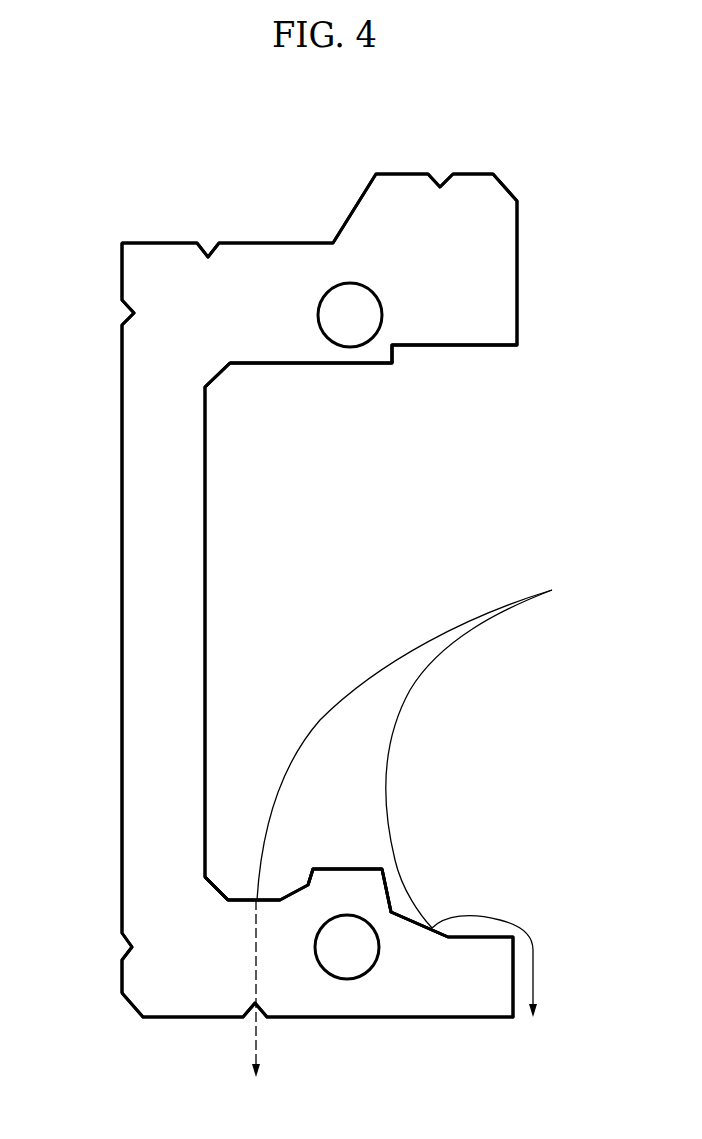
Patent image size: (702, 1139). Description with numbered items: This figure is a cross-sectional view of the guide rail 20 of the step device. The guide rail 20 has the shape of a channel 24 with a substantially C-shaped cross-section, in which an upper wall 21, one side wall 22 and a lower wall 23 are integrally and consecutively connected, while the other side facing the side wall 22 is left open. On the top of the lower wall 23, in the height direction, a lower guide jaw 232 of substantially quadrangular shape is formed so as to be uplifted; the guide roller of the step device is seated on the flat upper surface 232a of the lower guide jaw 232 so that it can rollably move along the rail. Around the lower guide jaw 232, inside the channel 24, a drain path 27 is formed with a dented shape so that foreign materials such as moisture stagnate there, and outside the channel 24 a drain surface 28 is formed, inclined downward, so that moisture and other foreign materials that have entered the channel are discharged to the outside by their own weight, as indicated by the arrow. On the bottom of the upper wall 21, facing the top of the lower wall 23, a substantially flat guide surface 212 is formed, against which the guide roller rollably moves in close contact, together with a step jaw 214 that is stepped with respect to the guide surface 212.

The guide rail 20 is at (271, 203).
The upper wall 21 is at (159, 242).
The side wall 22 is at (122, 629).
The lower wall 23 is at (392, 1019).
The channel 24 is at (438, 515).
The drain path 27 is at (215, 885).
The drain surface 28 is at (440, 918).
The guide surface 212 is at (342, 365).
The step jaw 214 is at (396, 356).
The lower guide jaw 232 is at (388, 882).
The flat upper surface 232a is at (346, 868).